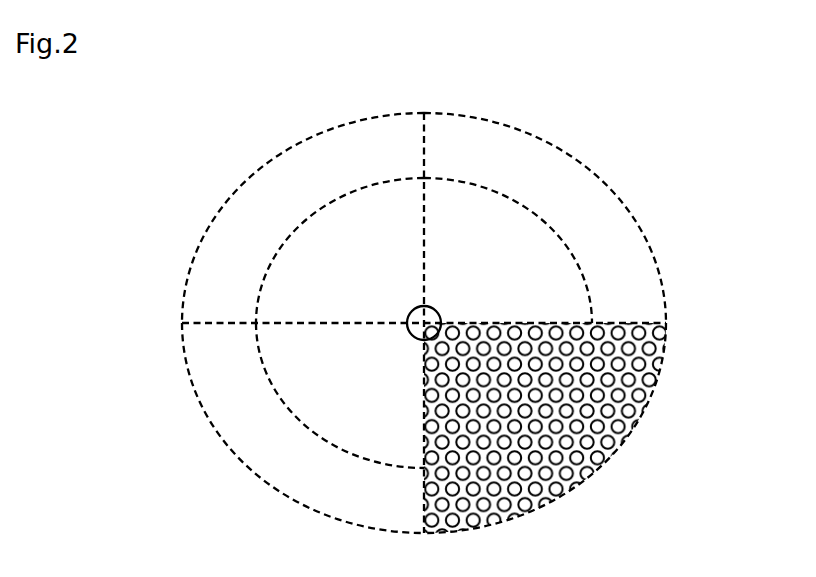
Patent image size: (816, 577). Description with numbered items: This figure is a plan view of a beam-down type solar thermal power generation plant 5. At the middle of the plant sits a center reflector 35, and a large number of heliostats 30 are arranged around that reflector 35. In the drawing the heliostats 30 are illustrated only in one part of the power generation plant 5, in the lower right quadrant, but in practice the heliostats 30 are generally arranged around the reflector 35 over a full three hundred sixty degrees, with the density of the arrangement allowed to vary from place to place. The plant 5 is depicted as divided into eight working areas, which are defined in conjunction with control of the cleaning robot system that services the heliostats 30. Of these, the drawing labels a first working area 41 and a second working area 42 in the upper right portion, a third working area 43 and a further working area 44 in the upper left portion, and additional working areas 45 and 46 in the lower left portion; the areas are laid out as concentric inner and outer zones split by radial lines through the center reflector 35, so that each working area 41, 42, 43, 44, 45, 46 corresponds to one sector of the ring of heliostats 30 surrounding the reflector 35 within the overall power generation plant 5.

The power generation plant 5 is at (727, 158).
The heliostat 30 is at (664, 365).
The center reflector 35 is at (437, 312).
The first working area 41 is at (564, 296).
The second working area 42 is at (590, 210).
The third working area 43 is at (322, 308).
The working area 44 is at (303, 208).
The working area 45 is at (319, 362).
The working area 46 is at (306, 466).